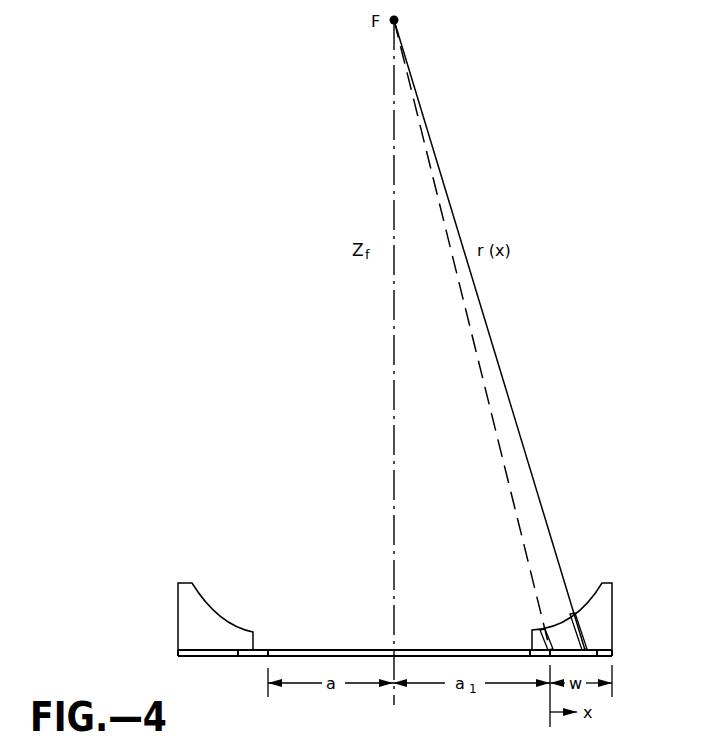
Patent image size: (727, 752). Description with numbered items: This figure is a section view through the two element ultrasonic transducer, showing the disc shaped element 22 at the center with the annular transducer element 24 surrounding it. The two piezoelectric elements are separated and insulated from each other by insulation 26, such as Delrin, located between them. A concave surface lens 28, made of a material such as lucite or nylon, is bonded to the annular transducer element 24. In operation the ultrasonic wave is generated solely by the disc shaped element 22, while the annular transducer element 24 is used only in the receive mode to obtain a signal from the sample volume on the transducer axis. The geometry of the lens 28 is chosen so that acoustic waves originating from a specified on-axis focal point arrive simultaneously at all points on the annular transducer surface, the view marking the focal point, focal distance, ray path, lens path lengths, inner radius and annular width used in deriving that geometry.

The disc shaped element 22 is at (280, 652).
The annular transducer element 24 is at (597, 657).
The insulation 26 is at (530, 657).
The concave surface lens 28 is at (602, 583).